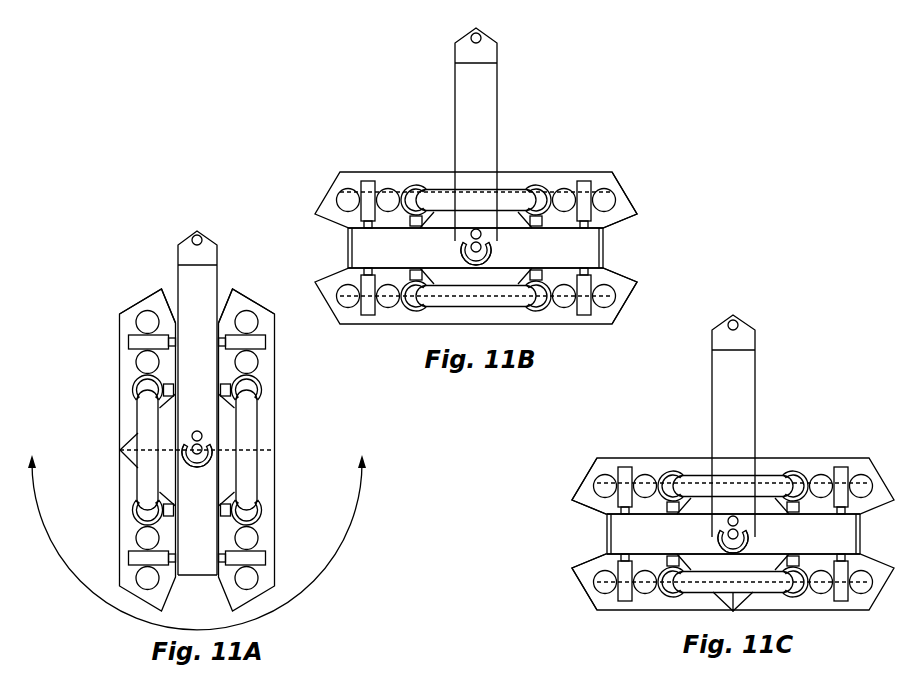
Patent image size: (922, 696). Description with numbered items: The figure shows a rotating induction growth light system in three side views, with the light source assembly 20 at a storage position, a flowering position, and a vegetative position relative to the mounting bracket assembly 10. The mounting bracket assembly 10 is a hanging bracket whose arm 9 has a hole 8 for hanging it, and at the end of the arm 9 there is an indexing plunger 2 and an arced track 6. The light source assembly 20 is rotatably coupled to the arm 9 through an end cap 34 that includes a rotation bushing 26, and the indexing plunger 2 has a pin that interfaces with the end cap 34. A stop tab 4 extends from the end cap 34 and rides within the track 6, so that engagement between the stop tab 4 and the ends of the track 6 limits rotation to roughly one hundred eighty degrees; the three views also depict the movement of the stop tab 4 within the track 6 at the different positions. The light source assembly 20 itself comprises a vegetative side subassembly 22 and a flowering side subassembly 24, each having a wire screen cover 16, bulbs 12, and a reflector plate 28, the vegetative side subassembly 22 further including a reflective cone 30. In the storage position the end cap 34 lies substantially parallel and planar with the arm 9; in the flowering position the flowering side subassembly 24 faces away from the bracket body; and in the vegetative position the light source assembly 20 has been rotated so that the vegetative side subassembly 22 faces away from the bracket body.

In FIG. 11A, the indexing plunger 2 is at (201, 432).
In FIG. 11B, the indexing plunger 2 is at (481, 231).
In FIG. 11C, the indexing plunger 2 is at (730, 516).
In FIG. 11A, the stop tab 4 is at (192, 459).
In FIG. 11B, the stop tab 4 is at (463, 249).
In FIG. 11C, the stop tab 4 is at (750, 537).
In FIG. 11A, the track 6 is at (213, 455).
In FIG. 11B, the track 6 is at (470, 261).
In FIG. 11C, the track 6 is at (750, 546).
In FIG. 11A, the hole 8 is at (200, 236).
In FIG. 11B, the hole 8 is at (481, 39).
In FIG. 11C, the hole 8 is at (737, 320).
In FIG. 11A, the arm 9 is at (198, 285).
In FIG. 11B, the arm 9 is at (455, 87).
In FIG. 11A, the mounting bracket assembly 10 is at (216, 228).
In FIG. 11B, the mounting bracket assembly 10 is at (505, 52).
In FIG. 11C, the mounting bracket assembly 10 is at (770, 322).
In FIG. 11A, the bulb 12 is at (147, 421).
In FIG. 11B, the bulb 12 is at (433, 195).
In FIG. 11C, the bulb 12 is at (767, 480).
In FIG. 11A, the wire screen cover 16 is at (120, 358).
In FIG. 11B, the wire screen cover 16 is at (557, 172).
In FIG. 11C, the wire screen cover 16 is at (858, 457).
In FIG. 11A, the light source assembly 20 is at (283, 575).
In FIG. 11B, the light source assembly 20 is at (668, 212).
In FIG. 11C, the light source assembly 20 is at (565, 514).
In FIG. 11A, the vegetative side subassembly 22 is at (125, 296).
In FIG. 11B, the vegetative side subassembly 22 is at (613, 165).
In FIG. 11C, the vegetative side subassembly 22 is at (600, 622).
In FIG. 11A, the flowering side subassembly 24 is at (259, 291).
In FIG. 11B, the flowering side subassembly 24 is at (594, 336).
In FIG. 11C, the flowering side subassembly 24 is at (666, 450).
In FIG. 11A, the rotation bushing 26 is at (208, 450).
In FIG. 11B, the rotation bushing 26 is at (478, 258).
In FIG. 11C, the rotation bushing 26 is at (727, 532).
In FIG. 11A, the reflector plate 28 is at (163, 290).
In FIG. 11B, the reflector plate 28 is at (623, 214).
In FIG. 11C, the reflector plate 28 is at (580, 499).
In FIG. 11A, the reflective cone 30 is at (120, 446).
In FIG. 11B, the reflective cone 30 is at (451, 222).
In FIG. 11C, the reflective cone 30 is at (760, 563).
In FIG. 11A, the end cap 34 is at (193, 555).
In FIG. 11B, the end cap 34 is at (592, 249).
In FIG. 11C, the end cap 34 is at (627, 534).